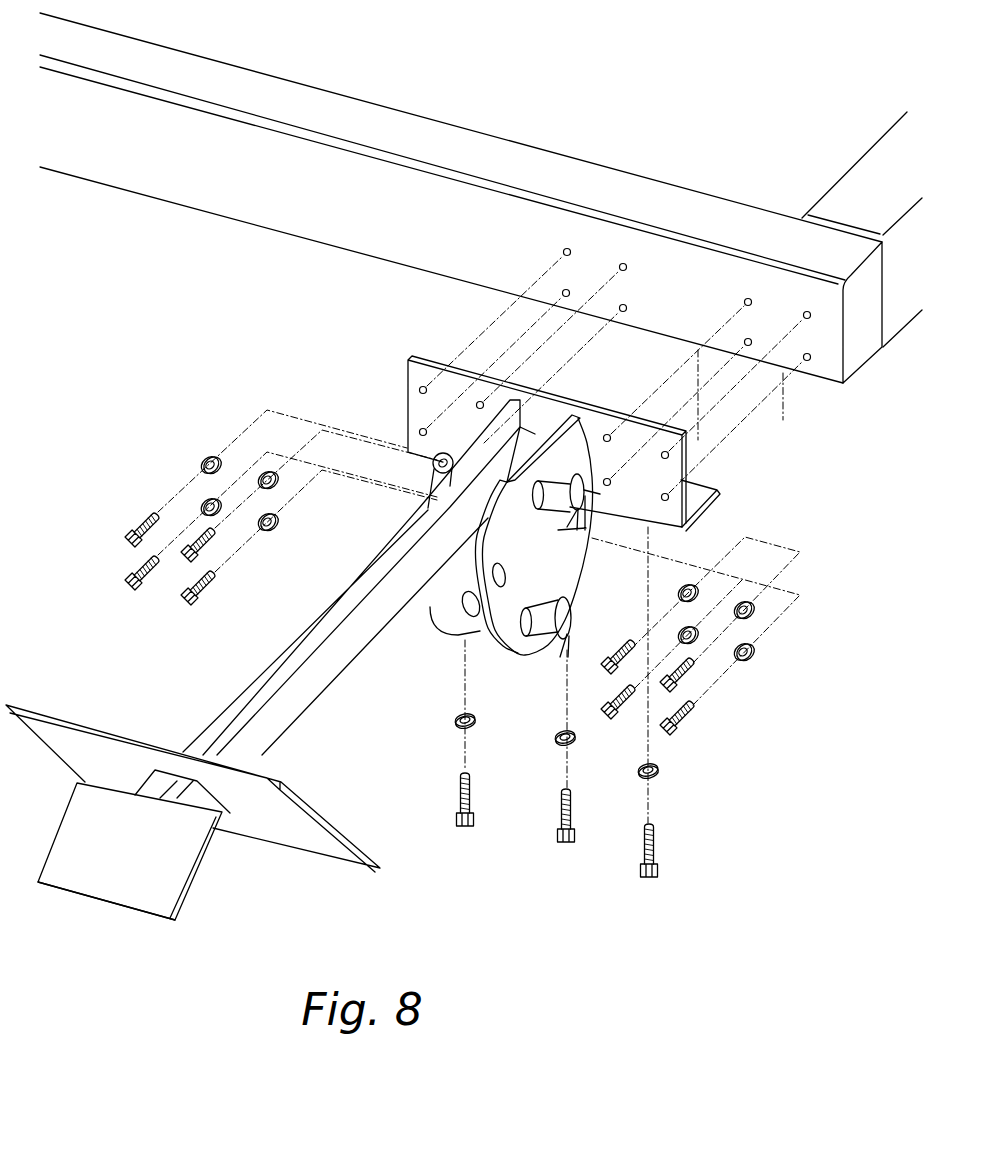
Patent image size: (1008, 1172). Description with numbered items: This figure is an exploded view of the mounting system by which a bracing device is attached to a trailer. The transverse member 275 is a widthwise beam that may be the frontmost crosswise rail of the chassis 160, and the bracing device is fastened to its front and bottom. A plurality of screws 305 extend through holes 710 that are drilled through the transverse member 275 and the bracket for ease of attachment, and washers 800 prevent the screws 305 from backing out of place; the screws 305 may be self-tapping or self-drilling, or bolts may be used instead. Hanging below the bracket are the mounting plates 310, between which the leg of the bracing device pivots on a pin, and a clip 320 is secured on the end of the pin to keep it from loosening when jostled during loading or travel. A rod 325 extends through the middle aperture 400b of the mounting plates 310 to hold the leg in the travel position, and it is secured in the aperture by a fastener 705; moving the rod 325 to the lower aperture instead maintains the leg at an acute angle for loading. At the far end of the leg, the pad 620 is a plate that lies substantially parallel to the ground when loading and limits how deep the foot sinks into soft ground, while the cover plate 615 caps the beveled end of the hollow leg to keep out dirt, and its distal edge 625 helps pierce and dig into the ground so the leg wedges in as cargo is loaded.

The transverse member 275 is at (287, 200).
The chassis 160 is at (860, 202).
The holes 710 is at (569, 247).
The clip 320 is at (584, 474).
The mounting plate 310 is at (522, 573).
The middle aperture 400b is at (494, 575).
The pad 620 is at (90, 722).
The cover plate 615 is at (110, 863).
The distal edge 625 is at (121, 917).
The fastener 705 is at (574, 607).
The rod 325 is at (538, 626).
The washers 800 is at (268, 530).
The screws 305 is at (697, 710).